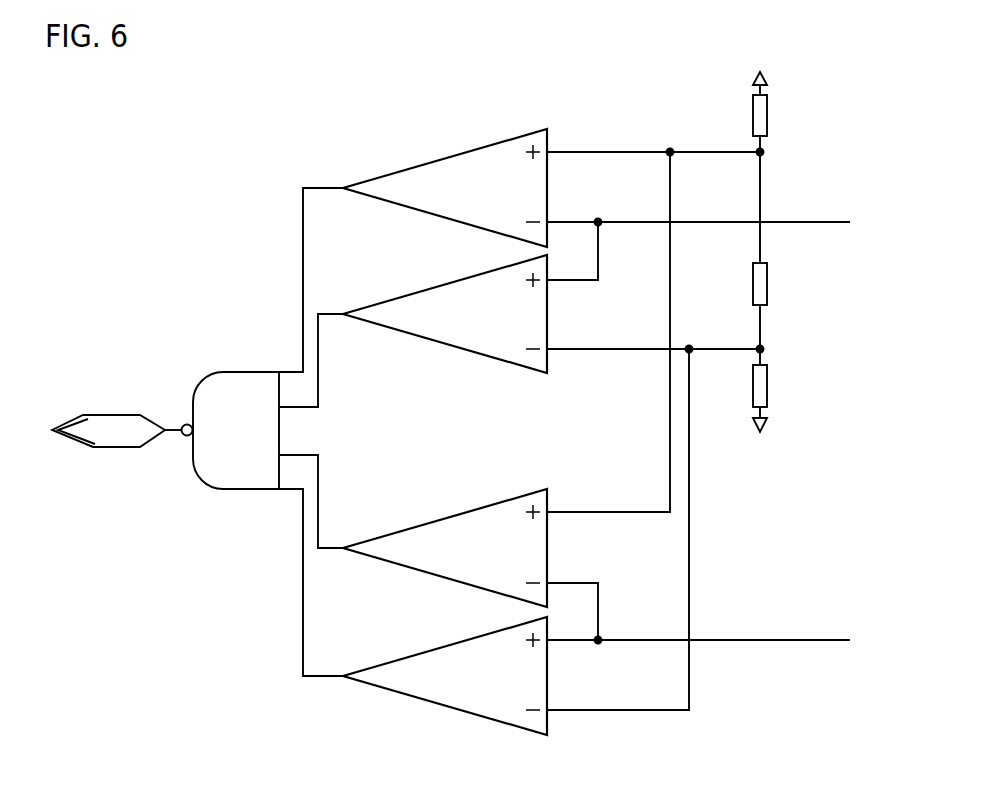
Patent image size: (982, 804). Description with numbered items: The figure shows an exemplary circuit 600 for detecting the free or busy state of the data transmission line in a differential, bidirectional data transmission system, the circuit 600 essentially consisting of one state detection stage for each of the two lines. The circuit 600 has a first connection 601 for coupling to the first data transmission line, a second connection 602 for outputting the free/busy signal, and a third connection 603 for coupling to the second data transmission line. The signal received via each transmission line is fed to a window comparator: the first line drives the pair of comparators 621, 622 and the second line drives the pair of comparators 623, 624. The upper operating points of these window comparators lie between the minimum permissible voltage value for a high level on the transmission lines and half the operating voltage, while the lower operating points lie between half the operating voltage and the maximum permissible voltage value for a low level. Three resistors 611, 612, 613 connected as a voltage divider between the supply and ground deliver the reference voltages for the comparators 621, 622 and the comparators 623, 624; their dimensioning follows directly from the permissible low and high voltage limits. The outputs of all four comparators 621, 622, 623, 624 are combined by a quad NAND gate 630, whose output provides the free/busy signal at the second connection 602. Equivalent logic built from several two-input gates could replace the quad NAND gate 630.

The circuit 600 is at (684, 82).
The first connection 601 is at (841, 221).
The second connection 602 is at (117, 448).
The third connection 603 is at (802, 639).
The resistor 611 is at (768, 114).
The resistor 612 is at (768, 284).
The resistor 613 is at (768, 385).
The comparator 621 is at (549, 187).
The comparator 622 is at (549, 332).
The comparator 623 is at (549, 547).
The comparator 624 is at (549, 675).
The quad NAND gate 630 is at (238, 372).